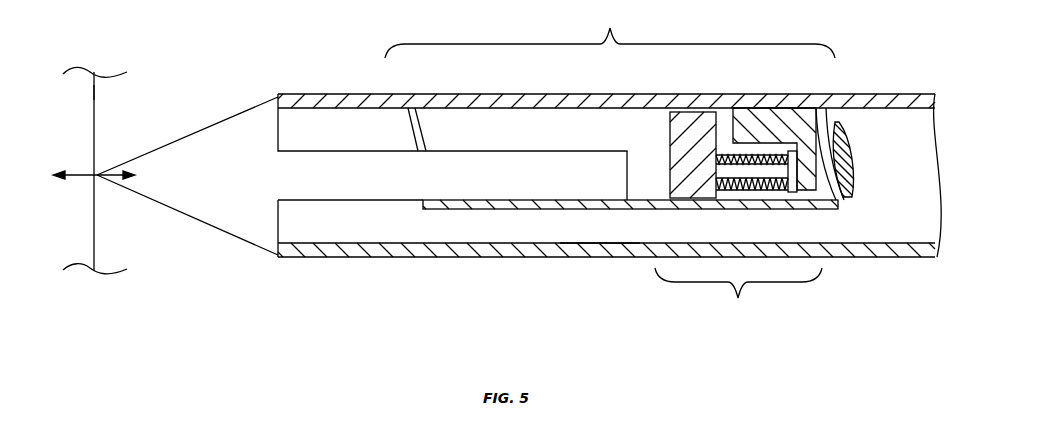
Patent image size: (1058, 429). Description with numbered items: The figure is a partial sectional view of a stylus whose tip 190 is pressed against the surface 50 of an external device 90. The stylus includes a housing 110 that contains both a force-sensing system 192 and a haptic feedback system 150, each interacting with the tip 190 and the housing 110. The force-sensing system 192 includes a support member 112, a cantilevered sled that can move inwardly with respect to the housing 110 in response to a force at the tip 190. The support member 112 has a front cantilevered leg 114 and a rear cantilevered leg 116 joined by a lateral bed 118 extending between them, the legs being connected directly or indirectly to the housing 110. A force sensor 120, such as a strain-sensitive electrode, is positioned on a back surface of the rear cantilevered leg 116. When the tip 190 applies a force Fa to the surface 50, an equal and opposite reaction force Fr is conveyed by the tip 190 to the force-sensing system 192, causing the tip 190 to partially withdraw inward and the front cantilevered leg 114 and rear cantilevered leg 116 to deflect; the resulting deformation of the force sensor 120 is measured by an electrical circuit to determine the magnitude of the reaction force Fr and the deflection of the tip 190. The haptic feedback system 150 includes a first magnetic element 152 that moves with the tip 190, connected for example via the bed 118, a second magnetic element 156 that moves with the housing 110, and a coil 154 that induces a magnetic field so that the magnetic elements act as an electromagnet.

The external device 90 is at (86, 72).
The surface 50 is at (95, 92).
The reaction force Fr is at (112, 168).
The applied force Fa is at (80, 178).
The tip 190 is at (193, 130).
The housing 110 is at (340, 94).
The force-sensing system 192 is at (610, 32).
The front cantilevered leg 114 is at (422, 118).
The support member 112 is at (440, 210).
The lateral bed 118 is at (600, 209).
The first magnetic element 152 is at (670, 140).
The coil 154 is at (752, 192).
The second magnetic element 156 is at (787, 125).
The rear cantilevered leg 116 is at (827, 110).
The force sensor 120 is at (853, 148).
The haptic feedback system 150 is at (738, 295).